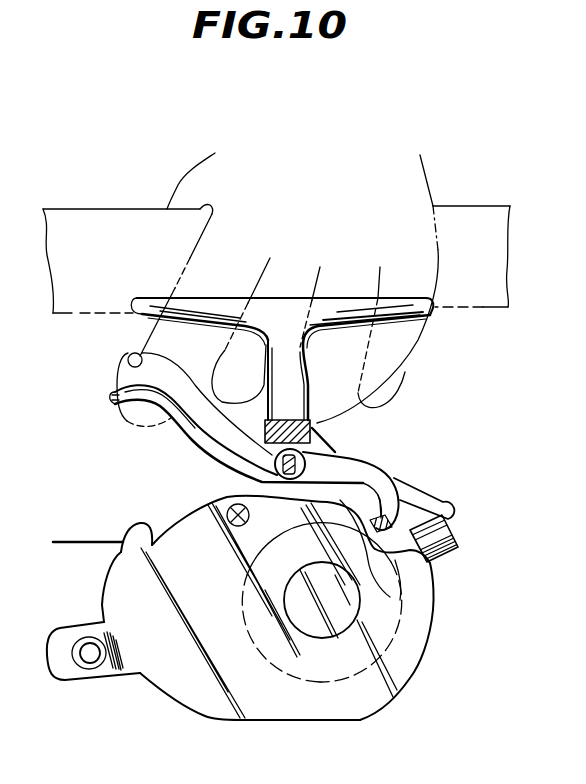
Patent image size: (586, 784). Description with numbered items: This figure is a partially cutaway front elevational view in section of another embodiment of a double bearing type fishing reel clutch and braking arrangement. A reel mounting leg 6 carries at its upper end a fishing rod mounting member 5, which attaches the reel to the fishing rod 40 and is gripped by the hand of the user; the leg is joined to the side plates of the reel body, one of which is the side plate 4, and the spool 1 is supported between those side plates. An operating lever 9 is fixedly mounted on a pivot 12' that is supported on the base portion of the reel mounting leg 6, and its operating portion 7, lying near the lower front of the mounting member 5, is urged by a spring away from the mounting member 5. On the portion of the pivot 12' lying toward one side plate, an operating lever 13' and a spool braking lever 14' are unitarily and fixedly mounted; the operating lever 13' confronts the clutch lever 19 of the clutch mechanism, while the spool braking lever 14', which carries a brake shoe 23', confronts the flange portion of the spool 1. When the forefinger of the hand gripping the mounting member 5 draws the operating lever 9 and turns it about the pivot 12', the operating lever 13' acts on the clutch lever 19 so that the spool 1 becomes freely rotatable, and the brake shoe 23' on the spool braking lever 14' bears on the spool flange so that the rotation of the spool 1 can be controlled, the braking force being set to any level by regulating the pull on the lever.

The fishing rod 40 is at (103, 222).
The fishing rod mounting member 5 is at (410, 321).
The reel mounting leg 6 is at (283, 378).
The operating portion 7 is at (108, 397).
The operating lever 9 is at (186, 444).
The pivot 12' is at (335, 458).
The spool braking lever 14' is at (424, 484).
The operating lever 13' is at (447, 498).
The clutch lever 19 is at (456, 543).
The spool 1 is at (412, 572).
The brake shoe 23' is at (438, 618).
The side plate 4 is at (394, 683).